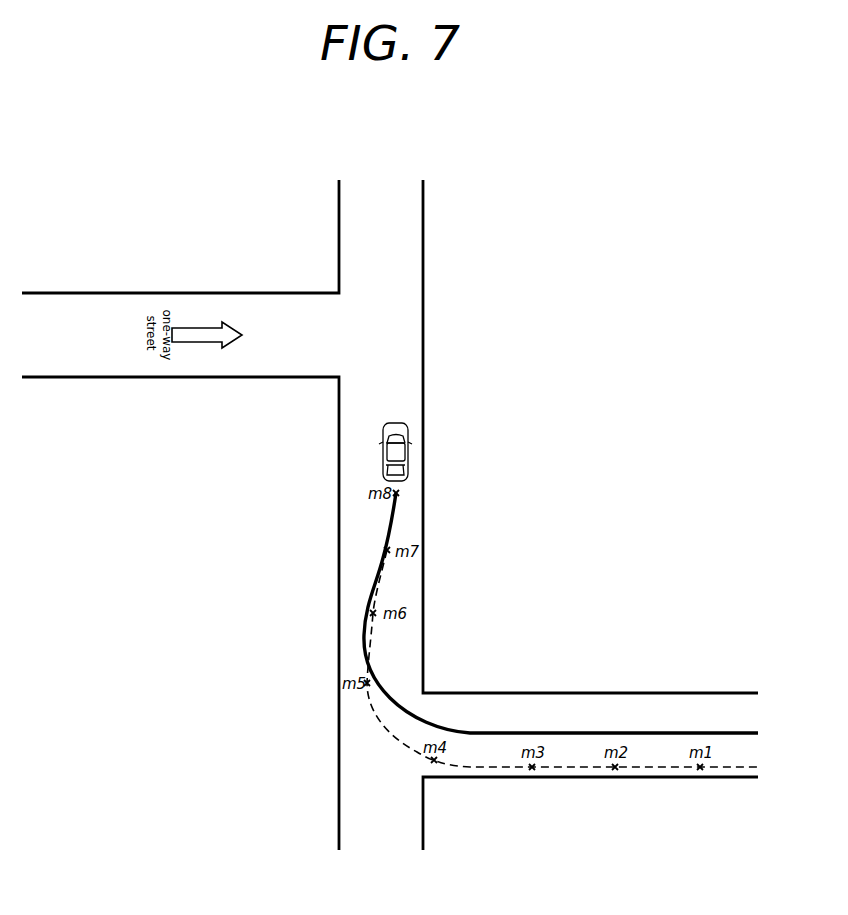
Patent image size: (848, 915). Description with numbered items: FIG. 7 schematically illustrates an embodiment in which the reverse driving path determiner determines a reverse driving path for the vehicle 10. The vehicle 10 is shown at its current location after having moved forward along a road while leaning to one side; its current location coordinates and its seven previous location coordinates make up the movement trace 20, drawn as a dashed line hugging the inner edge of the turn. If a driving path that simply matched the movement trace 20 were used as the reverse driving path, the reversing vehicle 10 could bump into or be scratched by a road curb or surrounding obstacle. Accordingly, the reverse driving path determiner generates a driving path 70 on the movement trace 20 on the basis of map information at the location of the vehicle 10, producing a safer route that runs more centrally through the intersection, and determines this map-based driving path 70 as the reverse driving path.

The vehicle 10 is at (410, 453).
The movement trace 20 is at (393, 738).
The driving path 70 is at (502, 733).